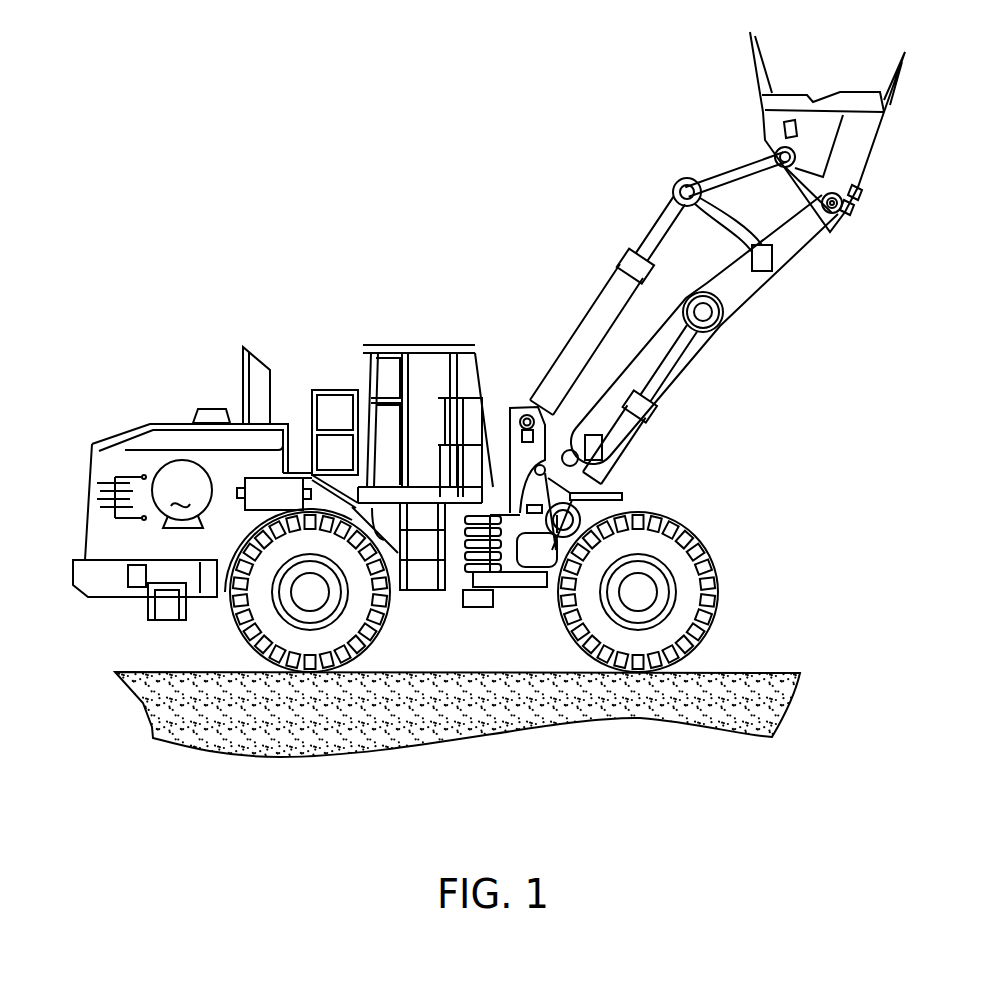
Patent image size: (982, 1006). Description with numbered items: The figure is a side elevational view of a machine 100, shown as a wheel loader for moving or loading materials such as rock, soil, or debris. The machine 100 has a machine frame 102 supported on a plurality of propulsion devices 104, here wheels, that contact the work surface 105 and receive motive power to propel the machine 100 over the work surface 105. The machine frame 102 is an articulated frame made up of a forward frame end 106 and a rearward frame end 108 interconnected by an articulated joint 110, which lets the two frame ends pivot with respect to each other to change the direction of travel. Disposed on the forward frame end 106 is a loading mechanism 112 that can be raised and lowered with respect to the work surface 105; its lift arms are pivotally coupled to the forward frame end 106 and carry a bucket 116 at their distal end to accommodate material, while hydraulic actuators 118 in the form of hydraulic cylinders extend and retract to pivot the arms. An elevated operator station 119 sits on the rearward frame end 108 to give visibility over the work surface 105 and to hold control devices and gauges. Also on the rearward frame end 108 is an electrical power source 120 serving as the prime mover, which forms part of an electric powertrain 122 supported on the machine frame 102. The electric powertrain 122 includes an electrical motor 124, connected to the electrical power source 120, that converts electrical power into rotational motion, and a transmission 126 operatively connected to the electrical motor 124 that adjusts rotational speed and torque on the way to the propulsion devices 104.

The machine 100 is at (200, 222).
The machine frame 102 is at (520, 603).
The propulsion devices 104 is at (682, 643).
The work surface 105 is at (808, 655).
The forward frame end 106 is at (592, 487).
The rearward frame end 108 is at (90, 548).
The articulated joint 110 is at (477, 617).
The loading mechanism 112 is at (742, 297).
The bucket 116 is at (805, 100).
The hydraulic actuators 118 is at (578, 330).
The operator station 119 is at (425, 345).
The electrical power source 120 is at (100, 463).
The electric powertrain 122 is at (195, 447).
The electrical motor 124 is at (158, 520).
The transmission 126 is at (268, 478).